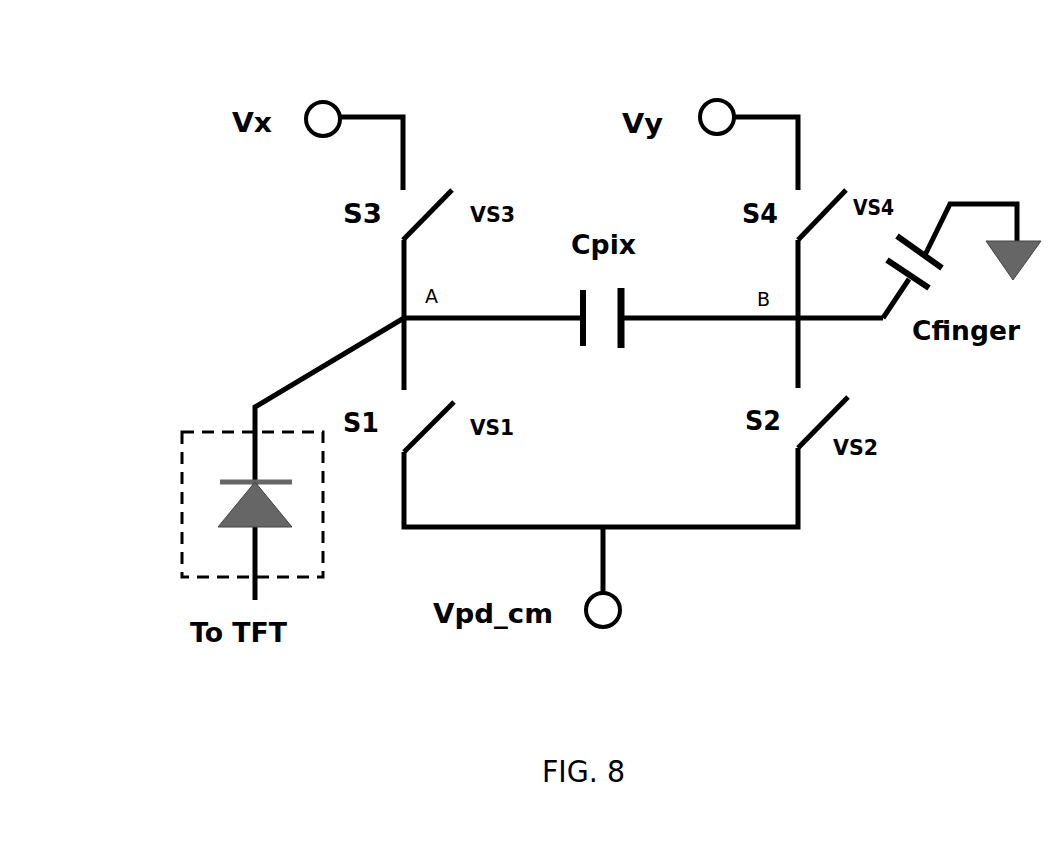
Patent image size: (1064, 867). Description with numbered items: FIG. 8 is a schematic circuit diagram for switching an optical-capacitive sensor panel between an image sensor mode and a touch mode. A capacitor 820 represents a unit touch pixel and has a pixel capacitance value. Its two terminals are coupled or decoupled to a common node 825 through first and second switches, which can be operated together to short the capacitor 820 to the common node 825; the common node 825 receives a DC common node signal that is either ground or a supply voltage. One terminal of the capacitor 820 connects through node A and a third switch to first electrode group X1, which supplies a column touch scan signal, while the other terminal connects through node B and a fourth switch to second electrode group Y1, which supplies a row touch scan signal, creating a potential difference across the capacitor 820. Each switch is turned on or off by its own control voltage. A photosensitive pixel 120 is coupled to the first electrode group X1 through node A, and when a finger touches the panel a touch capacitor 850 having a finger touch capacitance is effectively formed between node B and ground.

The first electrode group X1 is at (325, 101).
The second electrode group Y1 is at (717, 101).
The capacitor 820 is at (624, 348).
The touch capacitor 850 is at (920, 227).
The common node 825 is at (621, 611).
The photosensitive pixel 120 is at (181, 505).